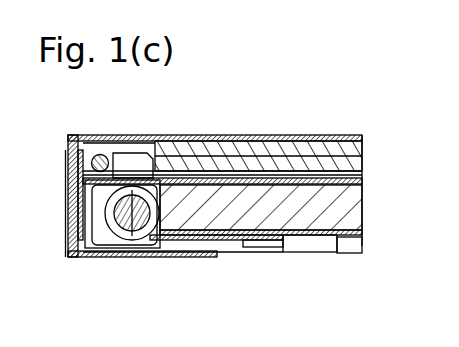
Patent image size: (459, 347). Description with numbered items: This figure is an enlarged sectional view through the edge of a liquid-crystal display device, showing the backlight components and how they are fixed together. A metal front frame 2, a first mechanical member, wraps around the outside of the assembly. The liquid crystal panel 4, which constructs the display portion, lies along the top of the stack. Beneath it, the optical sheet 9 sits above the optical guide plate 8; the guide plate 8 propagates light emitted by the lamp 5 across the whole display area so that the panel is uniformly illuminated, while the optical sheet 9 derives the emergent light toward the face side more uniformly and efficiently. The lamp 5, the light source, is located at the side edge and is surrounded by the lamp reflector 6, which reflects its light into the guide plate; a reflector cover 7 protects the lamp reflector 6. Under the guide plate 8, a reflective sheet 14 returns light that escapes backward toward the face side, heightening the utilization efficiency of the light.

The front frame 2 is at (100, 136).
The liquid crystal panel 4 is at (270, 160).
The lamp 5 is at (105, 208).
The lamp reflector 6 is at (160, 258).
The reflector cover 7 is at (185, 257).
The optical guide plate 8 is at (353, 205).
The optical sheet 9 is at (362, 170).
The reflective sheet 14 is at (338, 252).